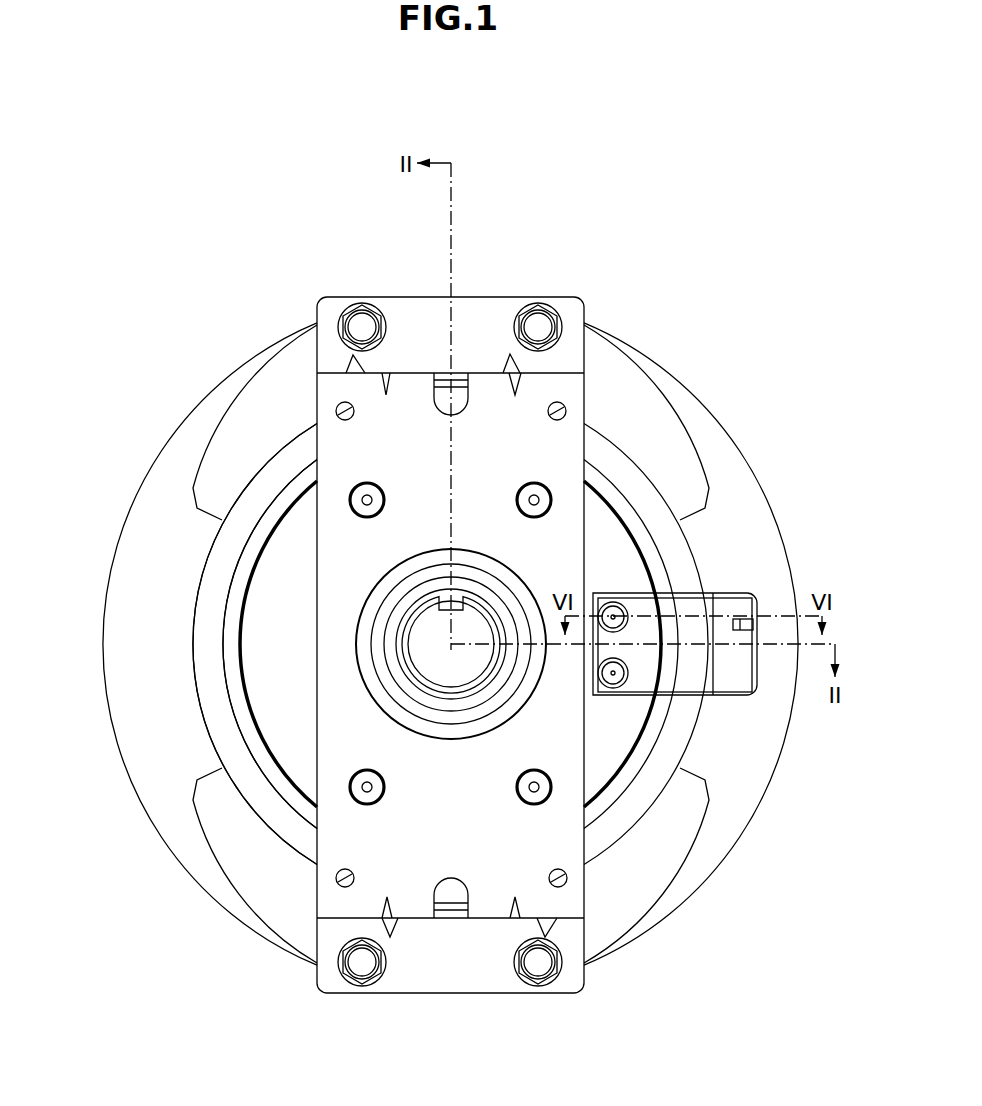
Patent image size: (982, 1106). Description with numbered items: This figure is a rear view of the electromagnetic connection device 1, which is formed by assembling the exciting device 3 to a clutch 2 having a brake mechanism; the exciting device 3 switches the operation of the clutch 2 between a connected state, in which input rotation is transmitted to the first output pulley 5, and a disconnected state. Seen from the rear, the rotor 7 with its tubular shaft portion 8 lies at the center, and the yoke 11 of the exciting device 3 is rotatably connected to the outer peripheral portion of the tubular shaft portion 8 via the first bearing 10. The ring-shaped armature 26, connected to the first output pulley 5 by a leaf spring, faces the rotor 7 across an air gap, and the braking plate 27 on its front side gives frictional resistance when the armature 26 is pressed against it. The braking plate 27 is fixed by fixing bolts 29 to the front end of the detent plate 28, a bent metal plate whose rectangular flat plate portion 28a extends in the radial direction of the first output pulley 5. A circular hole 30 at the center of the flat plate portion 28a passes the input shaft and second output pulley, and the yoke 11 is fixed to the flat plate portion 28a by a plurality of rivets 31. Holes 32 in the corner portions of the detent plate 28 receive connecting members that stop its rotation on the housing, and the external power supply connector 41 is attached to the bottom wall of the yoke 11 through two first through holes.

The electromagnetic connection device 1 is at (127, 358).
The clutch 2 is at (225, 437).
The exciting device 3 is at (257, 512).
The first output pulley 5 is at (138, 490).
The rotor 7 is at (225, 588).
The tubular shaft portion 8 is at (393, 683).
The first bearing 10 is at (363, 657).
The yoke 11 is at (267, 630).
The armature 26 is at (212, 537).
The braking plate 27 is at (618, 368).
The detent plate 28 is at (585, 407).
The flat plate portion 28a is at (570, 453).
The fixing bolts 29 is at (372, 305).
The circular hole 30 is at (407, 725).
The rivets 31 is at (350, 498).
The holes 32 is at (455, 395).
The external power supply connector 41 is at (732, 587).